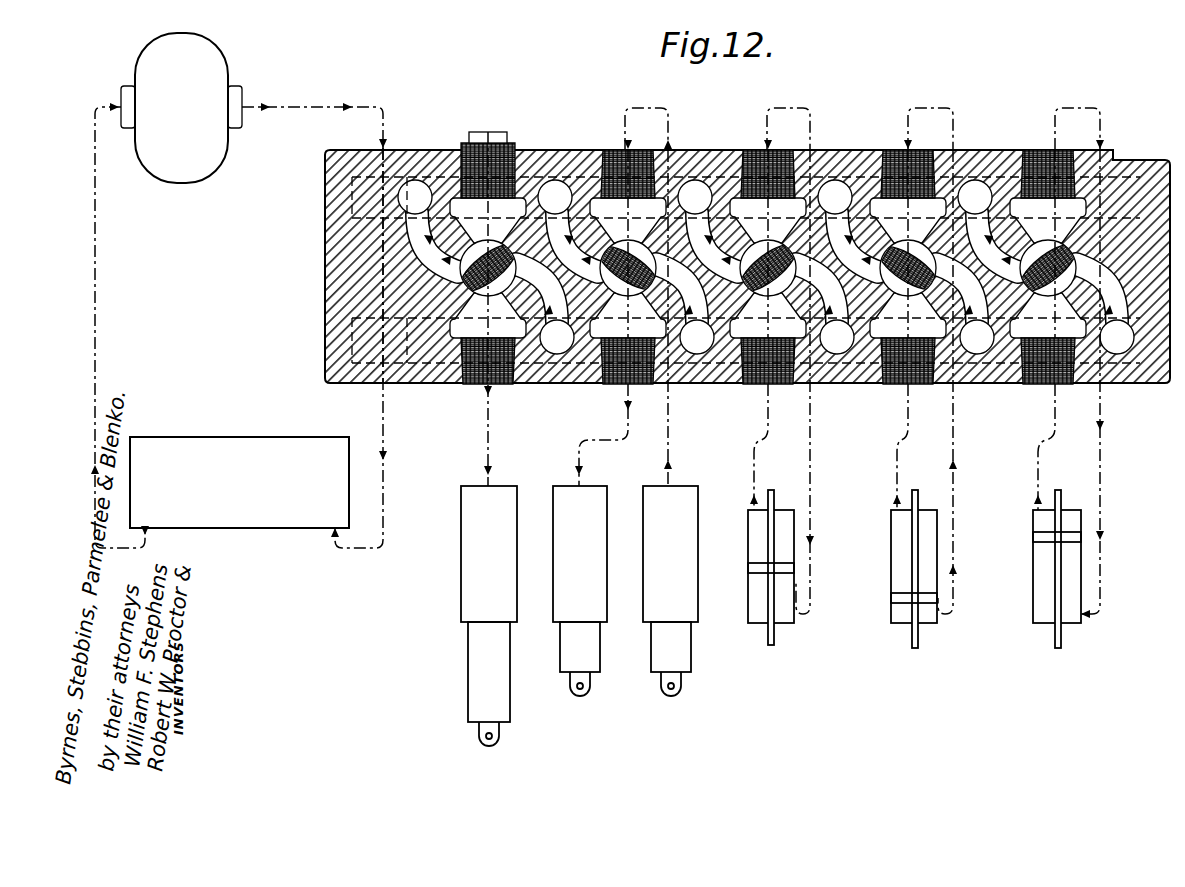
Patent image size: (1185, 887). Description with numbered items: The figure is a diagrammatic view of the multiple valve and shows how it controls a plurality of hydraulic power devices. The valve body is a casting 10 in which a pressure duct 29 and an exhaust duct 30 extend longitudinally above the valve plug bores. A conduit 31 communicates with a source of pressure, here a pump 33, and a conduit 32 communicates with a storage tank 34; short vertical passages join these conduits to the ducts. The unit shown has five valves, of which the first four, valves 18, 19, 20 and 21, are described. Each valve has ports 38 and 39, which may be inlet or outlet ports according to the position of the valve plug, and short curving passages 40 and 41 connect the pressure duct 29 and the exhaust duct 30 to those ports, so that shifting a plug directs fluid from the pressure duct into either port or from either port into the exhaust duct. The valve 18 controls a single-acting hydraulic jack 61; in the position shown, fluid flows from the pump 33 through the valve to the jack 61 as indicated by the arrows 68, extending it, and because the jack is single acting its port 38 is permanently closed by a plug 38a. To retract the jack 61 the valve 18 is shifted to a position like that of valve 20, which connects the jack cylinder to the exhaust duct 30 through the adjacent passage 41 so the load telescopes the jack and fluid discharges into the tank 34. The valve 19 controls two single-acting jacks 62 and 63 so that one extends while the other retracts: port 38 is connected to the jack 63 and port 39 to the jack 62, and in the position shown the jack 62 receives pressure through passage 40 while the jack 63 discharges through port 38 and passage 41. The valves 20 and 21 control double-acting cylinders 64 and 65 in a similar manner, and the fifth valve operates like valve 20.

The casting 10 is at (670, 390).
The valve 18 is at (413, 209).
The valve 19 is at (655, 190).
The valve 20 is at (822, 178).
The valve 21 is at (962, 198).
The pressure duct 29 is at (400, 208).
The exhaust duct 30 is at (400, 312).
The conduit 31 is at (312, 109).
The conduit 32 is at (388, 392).
The pump 33 is at (213, 60).
The storage tank 34 is at (232, 450).
The port 38 is at (620, 162).
The plug 38a is at (475, 153).
The port 39 is at (620, 386).
The curving passage 40 is at (425, 176).
The curving passage 41 is at (555, 360).
The single-acting hydraulic jack 61 is at (472, 578).
The single-acting jack 62 is at (597, 578).
The single-acting jack 63 is at (688, 578).
The double-acting cylinder 64 is at (796, 578).
The double-acting cylinder 65 is at (939, 578).
The arrows 68 is at (468, 268).